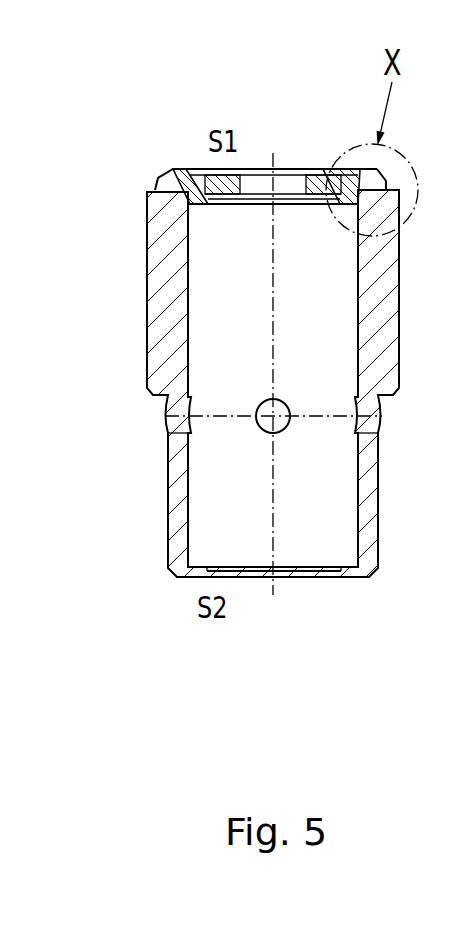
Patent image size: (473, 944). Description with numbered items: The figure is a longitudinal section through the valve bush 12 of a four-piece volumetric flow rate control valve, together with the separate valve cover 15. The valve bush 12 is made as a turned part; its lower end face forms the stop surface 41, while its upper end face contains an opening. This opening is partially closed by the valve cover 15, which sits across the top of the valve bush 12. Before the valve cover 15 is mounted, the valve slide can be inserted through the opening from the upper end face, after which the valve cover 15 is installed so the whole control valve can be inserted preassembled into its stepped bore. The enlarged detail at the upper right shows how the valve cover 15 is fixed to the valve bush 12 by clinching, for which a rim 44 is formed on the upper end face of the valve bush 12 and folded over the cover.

The valve bush 12 is at (129, 257).
The valve cover 15 is at (173, 150).
The stop surface 41 is at (352, 562).
The rim 44 is at (383, 190).